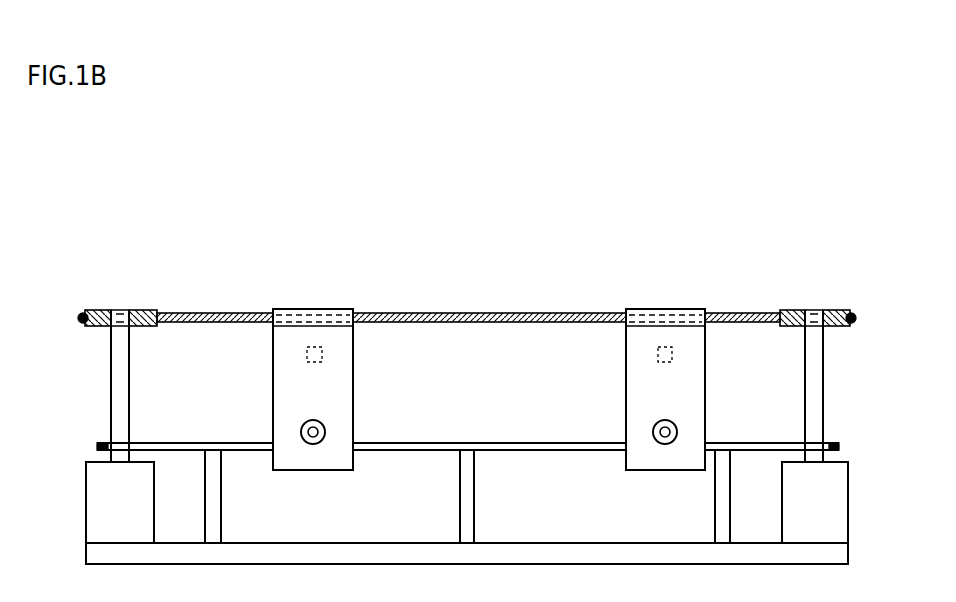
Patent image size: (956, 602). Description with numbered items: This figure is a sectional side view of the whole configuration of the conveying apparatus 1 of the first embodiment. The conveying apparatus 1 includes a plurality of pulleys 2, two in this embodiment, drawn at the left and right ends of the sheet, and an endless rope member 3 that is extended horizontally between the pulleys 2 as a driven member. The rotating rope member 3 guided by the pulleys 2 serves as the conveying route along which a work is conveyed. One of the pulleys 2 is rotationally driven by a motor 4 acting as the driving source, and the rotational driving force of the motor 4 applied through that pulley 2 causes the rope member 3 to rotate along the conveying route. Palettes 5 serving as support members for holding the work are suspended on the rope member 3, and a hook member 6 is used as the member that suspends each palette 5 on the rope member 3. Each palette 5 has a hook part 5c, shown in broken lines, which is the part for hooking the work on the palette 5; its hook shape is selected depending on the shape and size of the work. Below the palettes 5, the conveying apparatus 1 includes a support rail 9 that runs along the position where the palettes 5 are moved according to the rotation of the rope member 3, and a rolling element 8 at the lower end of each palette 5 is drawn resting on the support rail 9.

The conveying apparatus 1 is at (771, 172).
The pulley 2 is at (141, 300).
The rope member 3 is at (465, 312).
The motor 4 is at (154, 500).
The palette 5 is at (259, 383).
The hook part 5c is at (323, 355).
The hook member 6 is at (308, 308).
The roller 8 is at (326, 432).
The support rail 9 is at (505, 452).